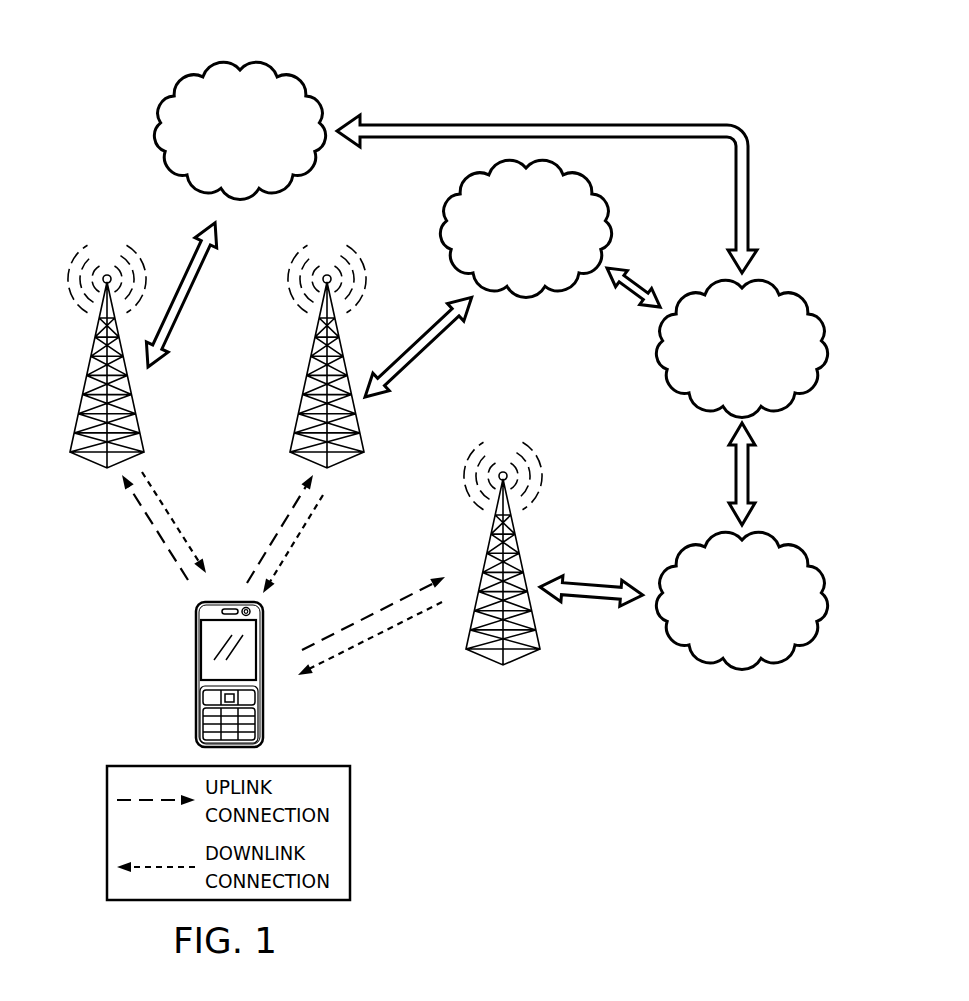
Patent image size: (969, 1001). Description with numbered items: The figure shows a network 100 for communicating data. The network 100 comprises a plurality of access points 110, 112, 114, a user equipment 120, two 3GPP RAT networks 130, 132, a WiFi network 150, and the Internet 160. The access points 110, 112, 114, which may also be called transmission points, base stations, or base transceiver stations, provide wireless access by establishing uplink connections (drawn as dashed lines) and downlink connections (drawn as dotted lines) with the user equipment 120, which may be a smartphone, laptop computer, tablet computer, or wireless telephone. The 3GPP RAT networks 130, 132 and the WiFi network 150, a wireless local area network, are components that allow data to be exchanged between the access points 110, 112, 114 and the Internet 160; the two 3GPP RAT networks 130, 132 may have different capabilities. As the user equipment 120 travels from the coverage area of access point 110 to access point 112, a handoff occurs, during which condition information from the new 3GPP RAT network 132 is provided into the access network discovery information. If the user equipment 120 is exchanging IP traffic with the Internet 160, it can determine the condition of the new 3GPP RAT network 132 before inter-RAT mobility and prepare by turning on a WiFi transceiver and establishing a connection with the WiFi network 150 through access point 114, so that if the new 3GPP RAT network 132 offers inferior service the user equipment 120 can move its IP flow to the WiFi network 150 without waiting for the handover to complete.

The network 100 is at (732, 53).
The access point 110 is at (300, 392).
The access point 112 is at (82, 393).
The access point 114 is at (520, 660).
The user equipment 120 is at (197, 672).
The 3GPP RAT network 130 is at (611, 208).
The 3GPP RAT network 132 is at (177, 78).
The WiFi network 150 is at (805, 545).
The Internet 160 is at (803, 293).